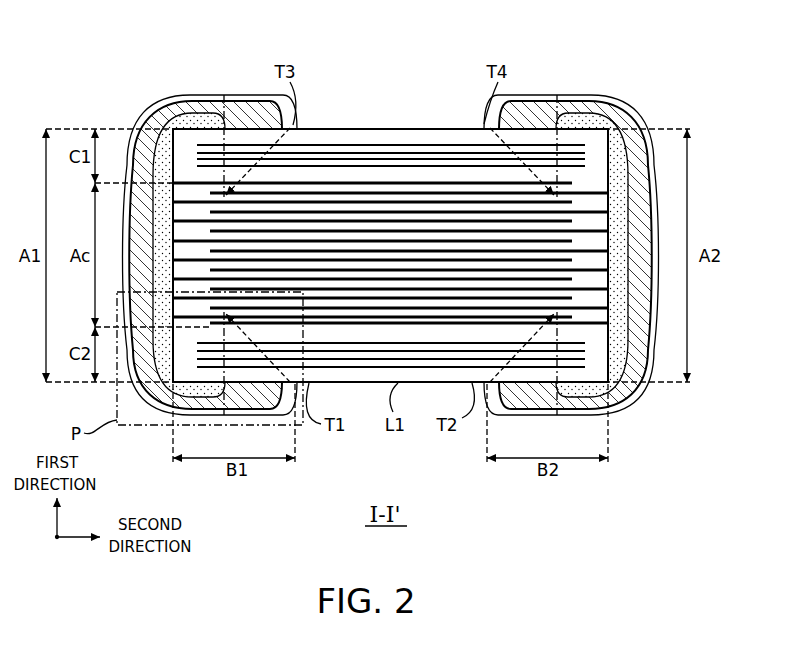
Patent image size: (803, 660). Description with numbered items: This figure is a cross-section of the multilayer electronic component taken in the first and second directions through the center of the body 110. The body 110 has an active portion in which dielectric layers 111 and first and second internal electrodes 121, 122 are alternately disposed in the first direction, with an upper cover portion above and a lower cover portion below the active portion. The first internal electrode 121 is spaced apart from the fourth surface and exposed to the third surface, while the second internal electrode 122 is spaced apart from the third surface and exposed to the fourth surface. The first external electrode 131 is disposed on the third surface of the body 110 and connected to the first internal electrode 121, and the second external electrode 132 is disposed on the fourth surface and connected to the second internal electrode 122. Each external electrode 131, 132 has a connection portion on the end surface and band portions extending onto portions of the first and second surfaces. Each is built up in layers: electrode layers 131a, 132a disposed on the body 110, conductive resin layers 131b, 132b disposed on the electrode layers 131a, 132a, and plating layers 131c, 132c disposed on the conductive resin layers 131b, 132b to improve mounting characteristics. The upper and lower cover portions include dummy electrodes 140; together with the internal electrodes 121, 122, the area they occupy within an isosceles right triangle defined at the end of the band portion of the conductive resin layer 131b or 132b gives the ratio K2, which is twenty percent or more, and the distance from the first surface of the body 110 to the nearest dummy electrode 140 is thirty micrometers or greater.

The body 110 is at (352, 127).
The dielectric layer 111 is at (432, 195).
The first internal electrode 121 is at (387, 183).
The second internal electrode 122 is at (462, 195).
The first external electrode 131 is at (179, 214).
The first electrode layer 131a is at (189, 219).
The first conductive resin layer 131b is at (135, 130).
The first plating layer 131c is at (113, 130).
The second external electrode 132 is at (605, 214).
The second electrode layer 132a is at (592, 219).
The second conductive resin layer 132b is at (645, 130).
The second plating layer 132c is at (668, 130).
The dummy electrode 140 is at (320, 140).